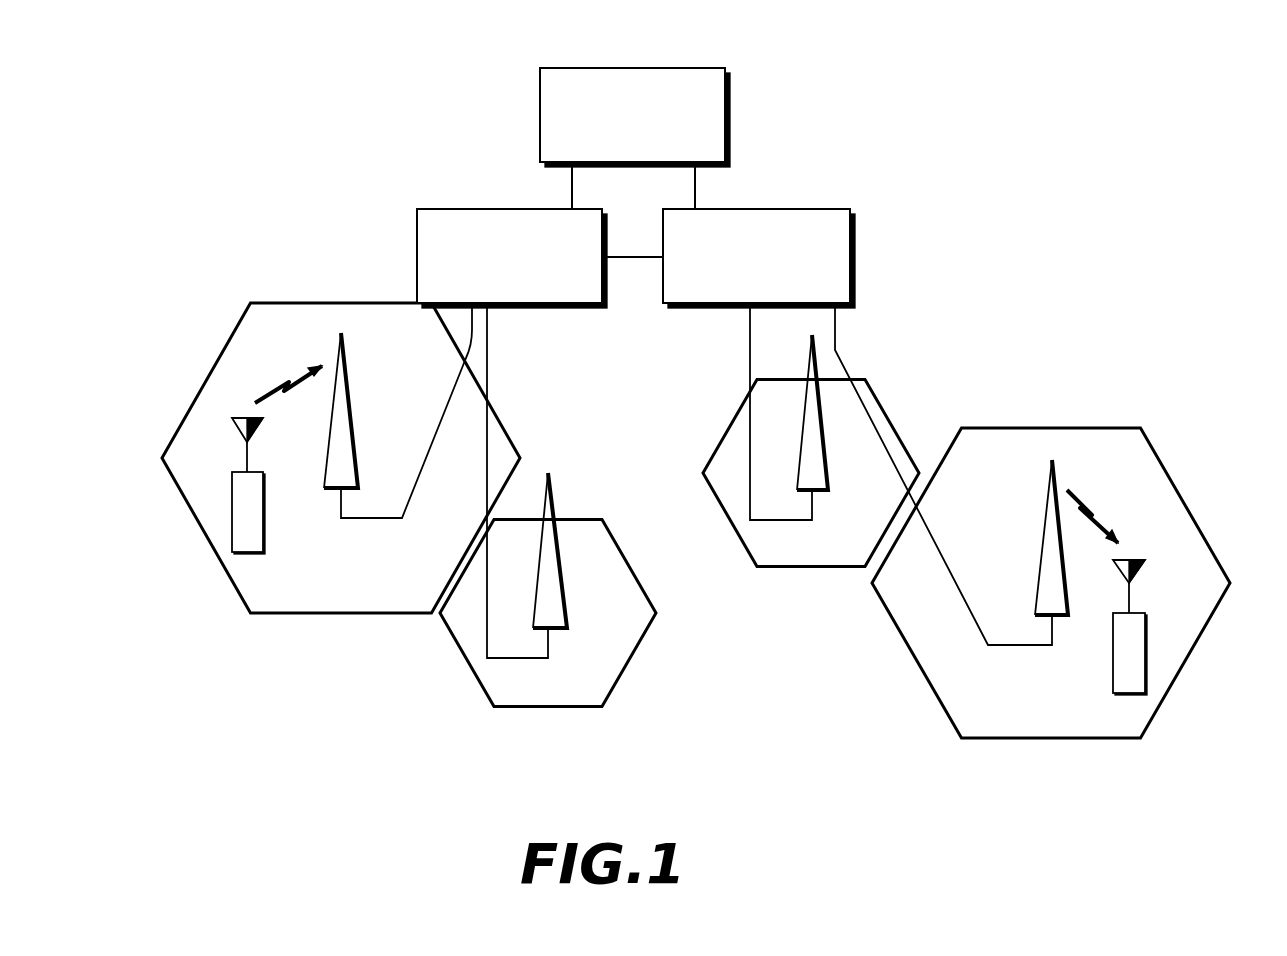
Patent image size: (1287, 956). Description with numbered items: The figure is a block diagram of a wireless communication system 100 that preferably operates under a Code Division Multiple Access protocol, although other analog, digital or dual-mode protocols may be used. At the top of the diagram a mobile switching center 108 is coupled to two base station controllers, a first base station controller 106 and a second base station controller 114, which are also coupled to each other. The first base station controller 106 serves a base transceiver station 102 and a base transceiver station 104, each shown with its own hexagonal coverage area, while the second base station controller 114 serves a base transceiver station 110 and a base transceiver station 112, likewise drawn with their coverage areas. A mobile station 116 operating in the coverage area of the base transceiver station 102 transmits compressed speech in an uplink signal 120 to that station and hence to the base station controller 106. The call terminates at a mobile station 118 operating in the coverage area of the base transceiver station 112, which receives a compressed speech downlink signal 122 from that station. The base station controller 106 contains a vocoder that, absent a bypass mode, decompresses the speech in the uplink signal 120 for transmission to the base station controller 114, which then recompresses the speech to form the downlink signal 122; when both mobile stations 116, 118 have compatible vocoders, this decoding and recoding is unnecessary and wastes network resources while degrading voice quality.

The communication system 100 is at (1087, 241).
The base transceiver station 102 is at (350, 392).
The base transceiver station 104 is at (553, 583).
The base station controller 106 is at (470, 208).
The mobile switching center 108 is at (732, 103).
The base transceiver station 110 is at (1048, 540).
The base transceiver station 112 is at (820, 465).
The base station controller 114 is at (800, 208).
The mobile station 116 is at (230, 510).
The mobile station 118 is at (1140, 665).
The uplink signal 120 is at (282, 382).
The downlink signal 122 is at (1093, 500).